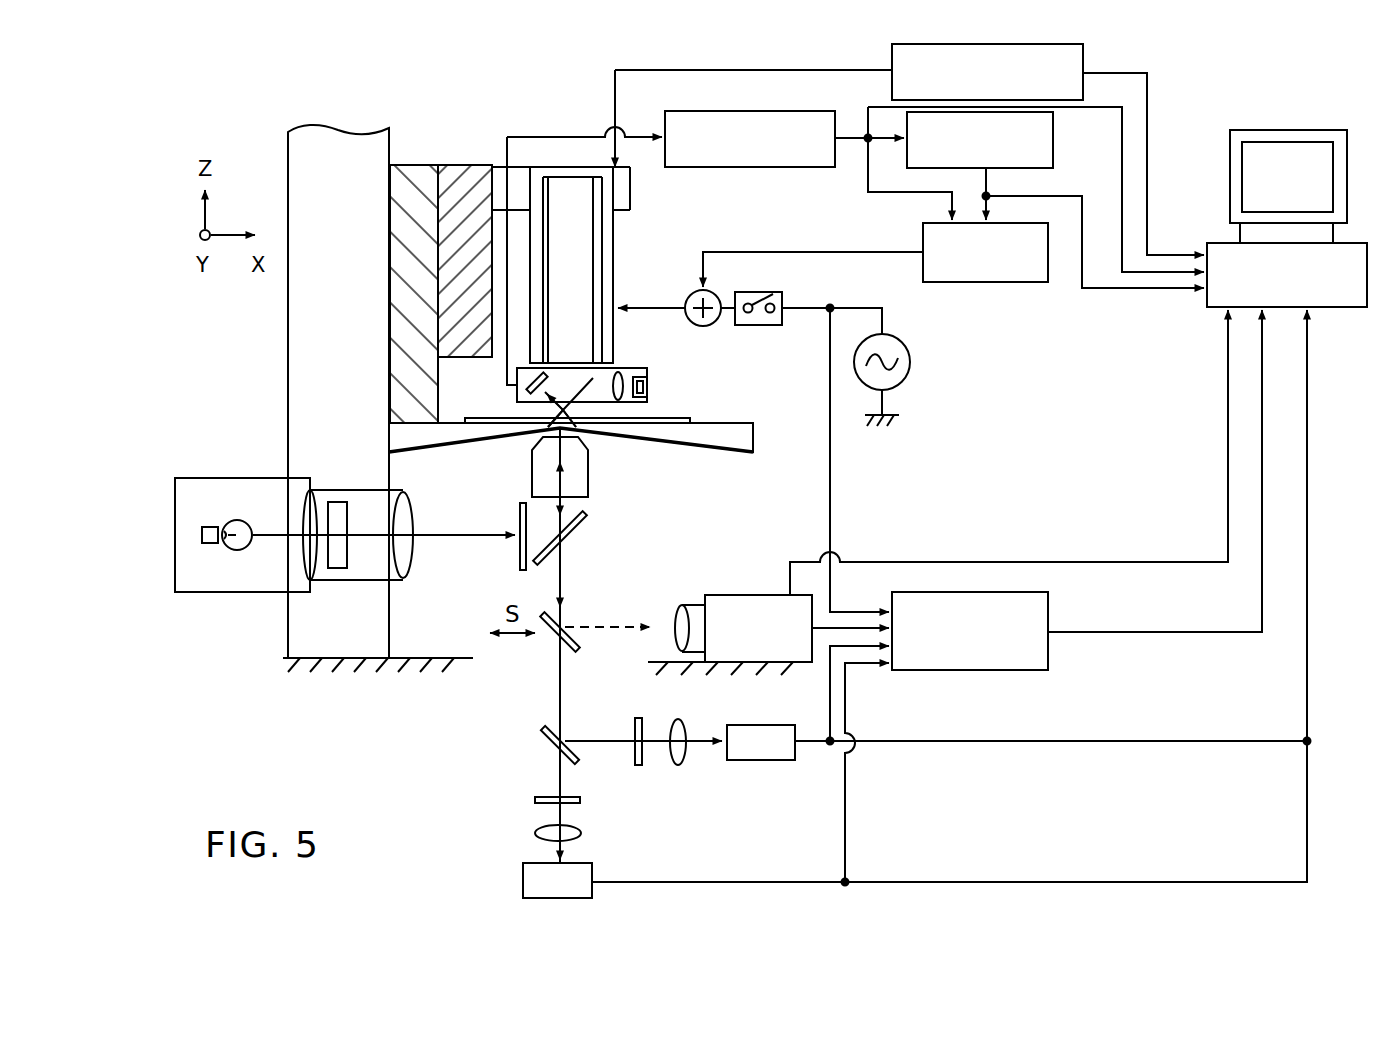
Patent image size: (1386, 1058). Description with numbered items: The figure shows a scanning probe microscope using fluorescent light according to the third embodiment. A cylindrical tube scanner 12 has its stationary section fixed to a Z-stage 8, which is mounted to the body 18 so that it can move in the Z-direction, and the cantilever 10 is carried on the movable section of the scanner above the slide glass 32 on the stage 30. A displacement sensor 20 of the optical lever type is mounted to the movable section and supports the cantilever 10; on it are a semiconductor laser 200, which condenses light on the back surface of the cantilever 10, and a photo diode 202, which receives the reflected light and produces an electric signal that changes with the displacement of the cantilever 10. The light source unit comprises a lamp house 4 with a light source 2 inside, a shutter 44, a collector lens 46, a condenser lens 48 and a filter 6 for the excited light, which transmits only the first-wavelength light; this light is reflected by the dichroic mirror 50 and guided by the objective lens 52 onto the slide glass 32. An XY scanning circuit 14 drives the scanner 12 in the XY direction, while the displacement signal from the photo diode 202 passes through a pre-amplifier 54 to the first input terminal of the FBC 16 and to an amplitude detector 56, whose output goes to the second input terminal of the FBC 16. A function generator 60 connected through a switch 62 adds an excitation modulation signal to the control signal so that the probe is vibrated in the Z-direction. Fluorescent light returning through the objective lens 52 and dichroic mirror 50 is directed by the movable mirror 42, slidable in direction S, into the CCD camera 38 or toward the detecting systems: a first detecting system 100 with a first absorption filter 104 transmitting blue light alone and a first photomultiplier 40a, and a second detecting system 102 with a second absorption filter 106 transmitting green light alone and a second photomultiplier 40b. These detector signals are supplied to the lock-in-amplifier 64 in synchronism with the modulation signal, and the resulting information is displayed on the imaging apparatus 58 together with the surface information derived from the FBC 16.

The light source 2 is at (249, 522).
The lamp house 4 is at (243, 478).
The filter of excited light 6 is at (519, 527).
The Z-stage 8 is at (457, 165).
The cantilever 10 is at (562, 428).
The cylindrical tube scanner 12 is at (613, 250).
The XY scanning circuit 14 is at (891, 90).
The feed back circuit (FBC) 16 is at (923, 236).
The body 18 is at (345, 128).
The displacement sensor 20 is at (625, 368).
The stage 30 is at (700, 452).
The slide glass 32 is at (492, 418).
The CCD camera 38 is at (752, 595).
The first photomultiplier 40a is at (522, 881).
The second photomultiplier 40b is at (755, 762).
The movable mirror 42 is at (580, 655).
The shutter 44 is at (338, 570).
The collector lens 46 is at (300, 556).
The condenser lens 48 is at (413, 555).
The dichroic mirror 50 is at (578, 545).
The objective lens 52 is at (532, 472).
The pre-amplifier 54 is at (738, 167).
The amplitude detector 56 is at (1053, 140).
The imaging apparatus 58 is at (1333, 307).
The function generator 60 is at (912, 360).
The switch 62 is at (762, 290).
The lock-in-amplifier 64 is at (1050, 652).
The first detecting system 100 is at (496, 836).
The second detecting system 102 is at (698, 766).
The first absorption filter 104 is at (580, 800).
The second absorption filter 106 is at (640, 718).
The semiconductor laser 200 is at (647, 388).
The photo diode 202 is at (552, 368).